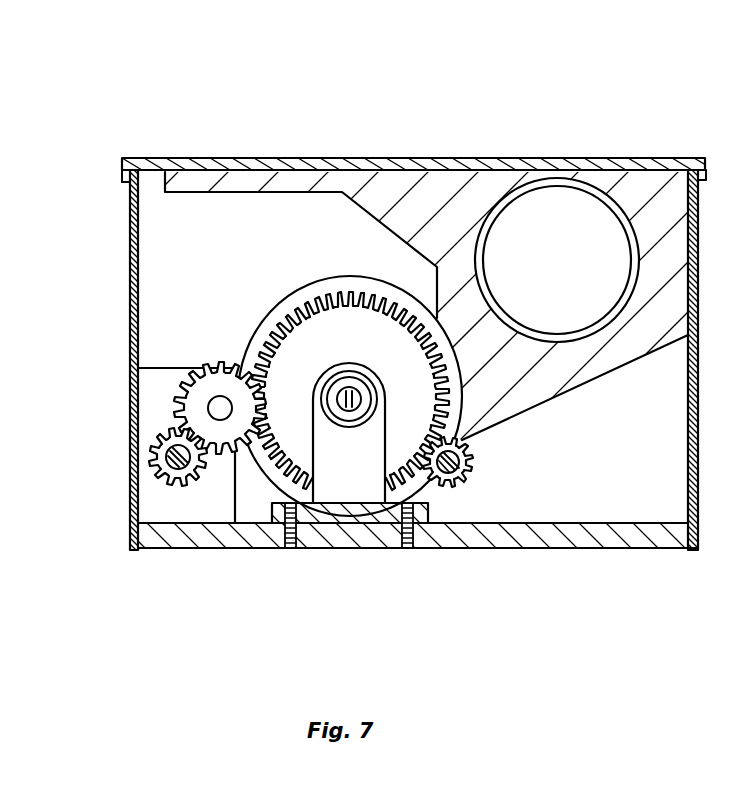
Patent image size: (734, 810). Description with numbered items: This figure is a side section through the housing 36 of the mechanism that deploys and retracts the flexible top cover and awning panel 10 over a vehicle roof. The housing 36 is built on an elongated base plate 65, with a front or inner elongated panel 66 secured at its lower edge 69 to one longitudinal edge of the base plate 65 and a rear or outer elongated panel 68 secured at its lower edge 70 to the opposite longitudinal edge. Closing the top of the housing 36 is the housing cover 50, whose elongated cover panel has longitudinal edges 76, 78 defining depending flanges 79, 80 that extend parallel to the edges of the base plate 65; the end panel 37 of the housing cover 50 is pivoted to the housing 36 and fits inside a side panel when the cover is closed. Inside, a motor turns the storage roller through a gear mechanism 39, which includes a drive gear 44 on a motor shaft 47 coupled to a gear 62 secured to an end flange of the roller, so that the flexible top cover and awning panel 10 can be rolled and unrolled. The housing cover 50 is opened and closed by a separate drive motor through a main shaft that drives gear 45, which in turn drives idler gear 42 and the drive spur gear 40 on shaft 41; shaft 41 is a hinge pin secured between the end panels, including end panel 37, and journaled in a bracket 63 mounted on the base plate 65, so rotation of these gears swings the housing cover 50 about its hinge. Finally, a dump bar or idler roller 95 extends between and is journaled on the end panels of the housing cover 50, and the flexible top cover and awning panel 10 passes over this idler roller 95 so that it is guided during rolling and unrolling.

The flexible top cover and awning panel 10 is at (368, 277).
The housing 36 is at (130, 246).
The end panel 37 is at (408, 193).
The gear mechanism 39 is at (248, 288).
The drive spur gear 40 is at (168, 480).
The shaft 41 is at (170, 455).
The idler gear 42 is at (200, 372).
The drive gear 44 is at (475, 460).
The gear 45 is at (403, 355).
The motor shaft 47 is at (455, 485).
The housing cover 50 is at (233, 158).
The gear 62 is at (290, 312).
The bracket 63 is at (155, 397).
The base plate 65 is at (318, 550).
The inner elongated panel 66 is at (688, 394).
The outer elongated panel 68 is at (130, 322).
The lower edge 69 is at (690, 550).
The lower edge 70 is at (138, 550).
The longitudinal edge 76 is at (700, 157).
The longitudinal edge 78 is at (122, 159).
The depending flange 79 is at (706, 176).
The depending flange 80 is at (122, 179).
The idler roller 95 is at (527, 210).